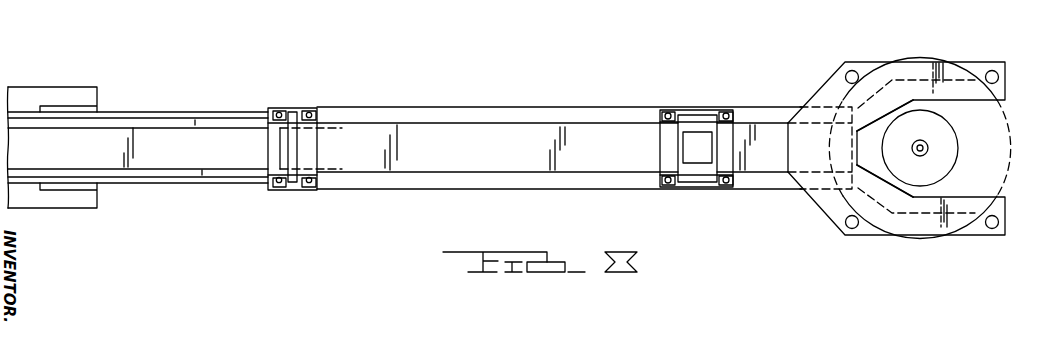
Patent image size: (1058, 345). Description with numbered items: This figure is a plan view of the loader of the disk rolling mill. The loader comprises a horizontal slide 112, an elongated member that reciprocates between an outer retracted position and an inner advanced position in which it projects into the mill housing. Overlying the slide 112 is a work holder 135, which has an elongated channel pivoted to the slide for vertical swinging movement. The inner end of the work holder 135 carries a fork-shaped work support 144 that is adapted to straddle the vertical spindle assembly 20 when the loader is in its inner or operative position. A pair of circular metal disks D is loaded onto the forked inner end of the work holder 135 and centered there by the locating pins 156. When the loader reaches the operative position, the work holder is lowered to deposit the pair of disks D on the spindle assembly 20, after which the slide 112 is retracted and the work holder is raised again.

The horizontal slide 112 is at (493, 94).
The work holder 135 is at (617, 132).
The fork-shaped work support 144 is at (872, 63).
The locating pins 156 is at (847, 78).
The spindle assembly 20 is at (942, 147).
The circular metal disks D is at (1002, 153).